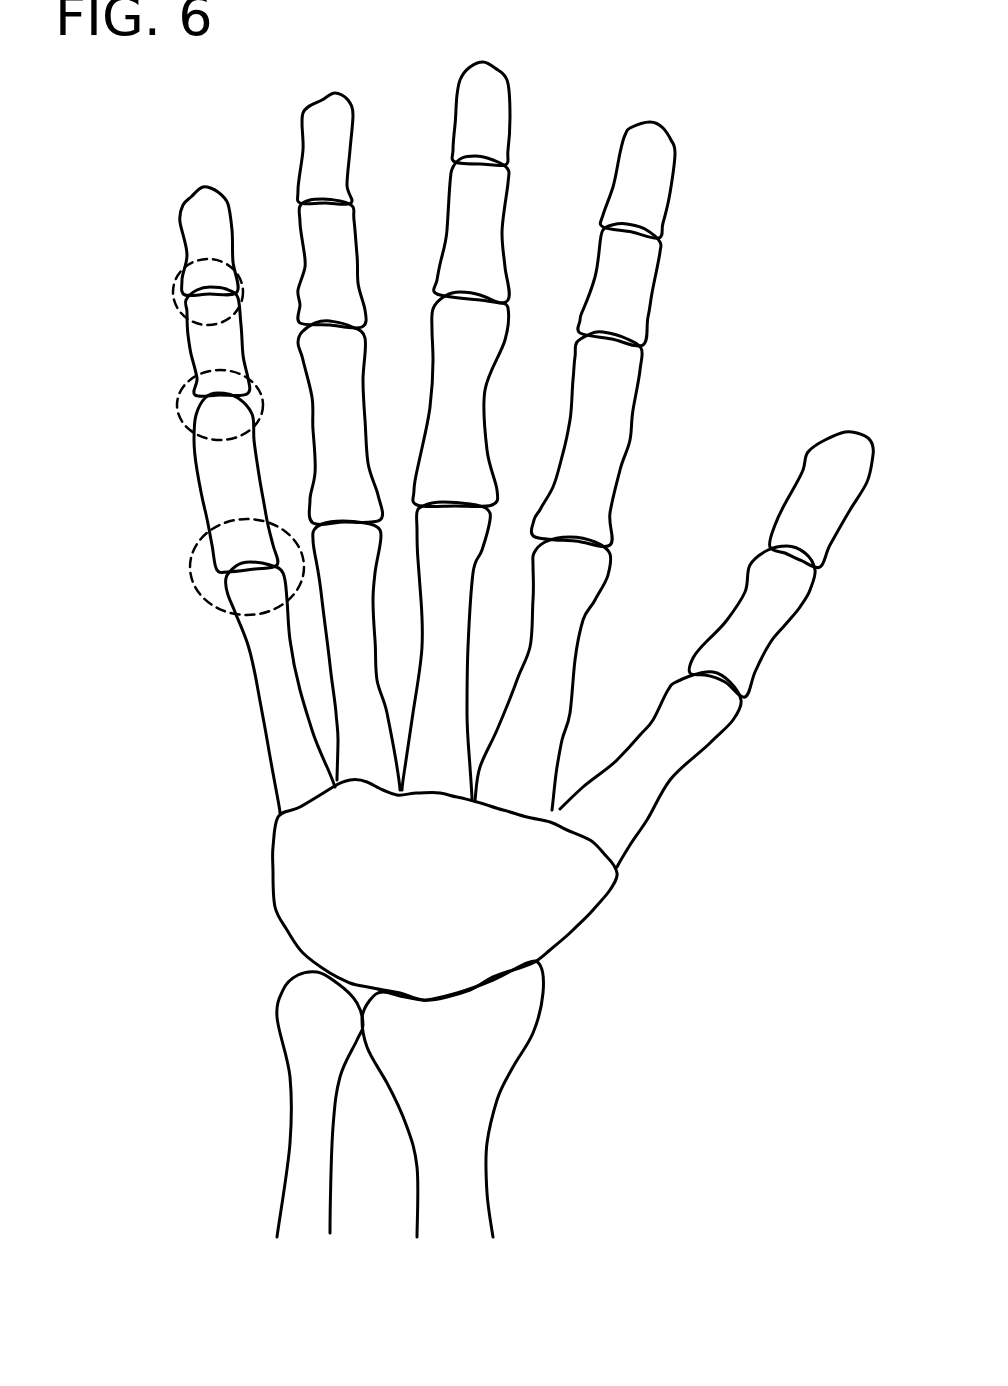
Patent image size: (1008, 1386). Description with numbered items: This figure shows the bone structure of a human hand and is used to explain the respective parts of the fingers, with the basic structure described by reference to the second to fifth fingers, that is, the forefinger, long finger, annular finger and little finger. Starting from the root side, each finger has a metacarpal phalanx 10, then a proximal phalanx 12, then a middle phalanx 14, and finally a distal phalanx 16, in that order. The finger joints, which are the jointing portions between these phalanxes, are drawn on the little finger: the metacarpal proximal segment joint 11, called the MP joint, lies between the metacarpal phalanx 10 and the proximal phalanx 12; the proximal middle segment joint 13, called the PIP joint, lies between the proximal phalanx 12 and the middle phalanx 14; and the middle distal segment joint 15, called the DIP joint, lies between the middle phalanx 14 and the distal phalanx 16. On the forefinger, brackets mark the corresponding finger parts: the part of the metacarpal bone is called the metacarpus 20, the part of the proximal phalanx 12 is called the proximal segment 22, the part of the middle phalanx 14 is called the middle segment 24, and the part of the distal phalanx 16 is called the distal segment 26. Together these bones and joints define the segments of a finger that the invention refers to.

The metacarpal phalanx 10 is at (267, 685).
The metacarpal proximal segment joint 11 is at (193, 577).
The proximal phalanx 12 is at (225, 483).
The proximal middle segment joint 13 is at (176, 404).
The middle phalanx 14 is at (203, 342).
The middle distal segment joint 15 is at (173, 284).
The distal phalanx 16 is at (214, 240).
The metacarpus 20 is at (563, 807).
The proximal segment 22 is at (668, 355).
The middle segment 24 is at (688, 243).
The distal segment 26 is at (703, 133).